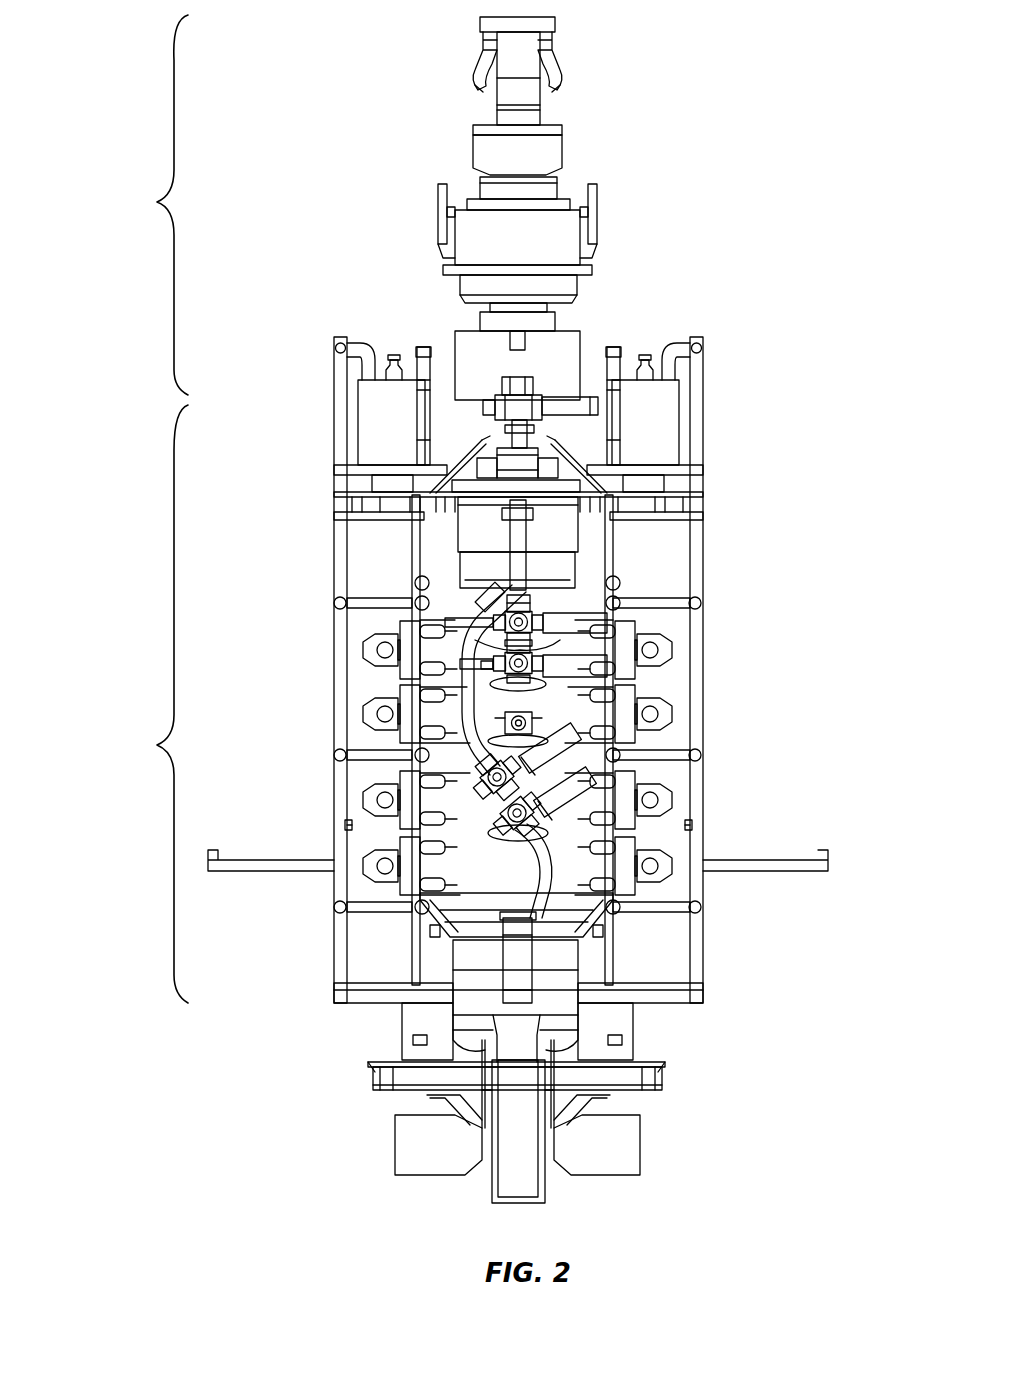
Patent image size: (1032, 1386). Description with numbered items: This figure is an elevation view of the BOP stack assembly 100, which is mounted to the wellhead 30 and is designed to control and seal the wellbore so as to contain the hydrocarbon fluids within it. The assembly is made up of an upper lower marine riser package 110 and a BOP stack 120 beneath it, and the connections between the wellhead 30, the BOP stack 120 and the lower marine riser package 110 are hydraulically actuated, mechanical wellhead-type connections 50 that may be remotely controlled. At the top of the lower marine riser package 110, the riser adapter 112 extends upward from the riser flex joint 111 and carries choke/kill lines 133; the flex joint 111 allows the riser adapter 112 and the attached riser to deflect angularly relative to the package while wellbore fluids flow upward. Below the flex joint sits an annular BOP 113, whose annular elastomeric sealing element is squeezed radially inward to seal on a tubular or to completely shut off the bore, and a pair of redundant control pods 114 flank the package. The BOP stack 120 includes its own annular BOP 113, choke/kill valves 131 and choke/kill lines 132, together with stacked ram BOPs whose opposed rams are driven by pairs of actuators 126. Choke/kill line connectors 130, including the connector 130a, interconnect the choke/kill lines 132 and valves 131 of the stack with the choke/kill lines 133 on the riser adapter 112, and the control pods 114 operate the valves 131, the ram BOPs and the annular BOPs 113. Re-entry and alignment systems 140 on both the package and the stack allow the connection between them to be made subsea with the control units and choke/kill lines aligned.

The BOP stack assembly 100 is at (132, 412).
The lower marine riser package 110 is at (154, 205).
The BOP stack 120 is at (154, 704).
The choke/kill lines 133 is at (556, 74).
The riser adapter 112 is at (533, 100).
The riser flex joint 111 is at (553, 155).
The annular BOP 113 is at (575, 232).
The connections 50 is at (556, 350).
The control pods 114 is at (365, 412).
The central valve assembly 130a is at (505, 463).
The re-entry and alignment systems 140 is at (648, 467).
The choke/kill lines 132 is at (520, 547).
The choke/kill valves 131 is at (492, 635).
The actuators 126 is at (378, 652).
The choke/kill line connectors 130 is at (520, 960).
The wellhead 30 is at (492, 1080).